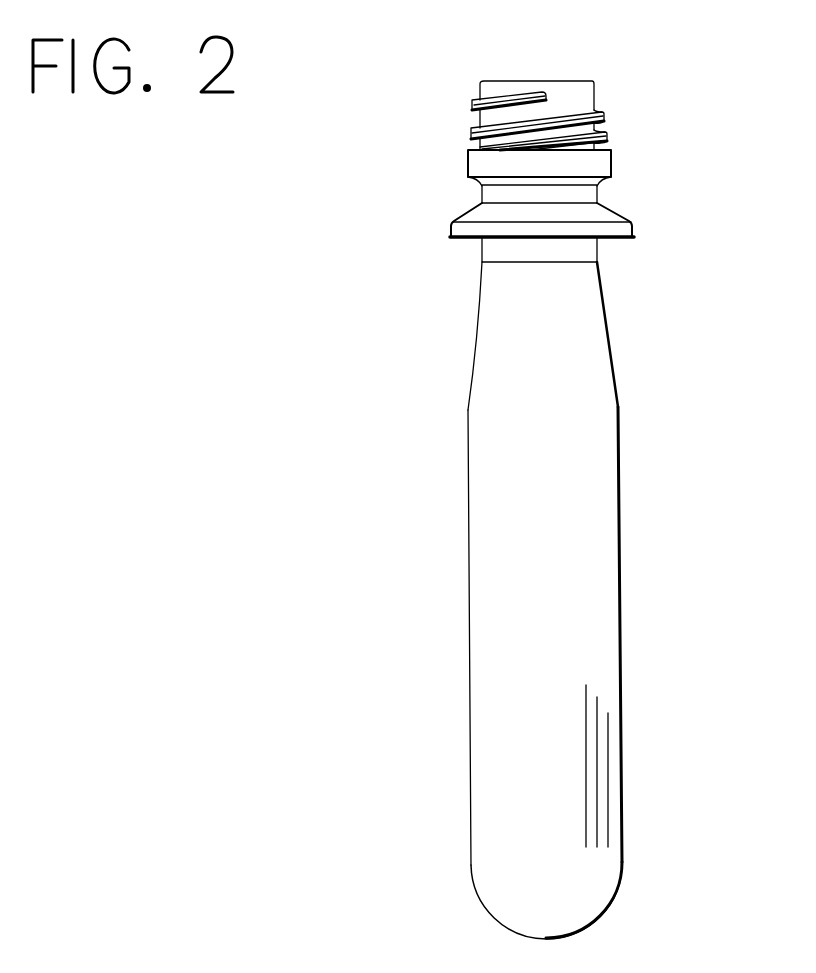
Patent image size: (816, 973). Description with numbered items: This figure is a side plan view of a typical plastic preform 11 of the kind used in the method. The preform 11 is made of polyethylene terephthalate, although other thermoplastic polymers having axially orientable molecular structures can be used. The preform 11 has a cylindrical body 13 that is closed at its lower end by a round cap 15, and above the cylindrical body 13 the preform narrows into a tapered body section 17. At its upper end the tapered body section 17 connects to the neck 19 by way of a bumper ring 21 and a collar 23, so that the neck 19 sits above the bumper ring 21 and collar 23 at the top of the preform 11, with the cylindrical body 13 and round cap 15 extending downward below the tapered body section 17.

The preform 11 is at (668, 182).
The cylindrical body 13 is at (482, 522).
The round cap 15 is at (597, 890).
The tapered body section 17 is at (482, 361).
The neck 19 is at (447, 80).
The bumper ring 21 is at (460, 233).
The collar 23 is at (590, 247).